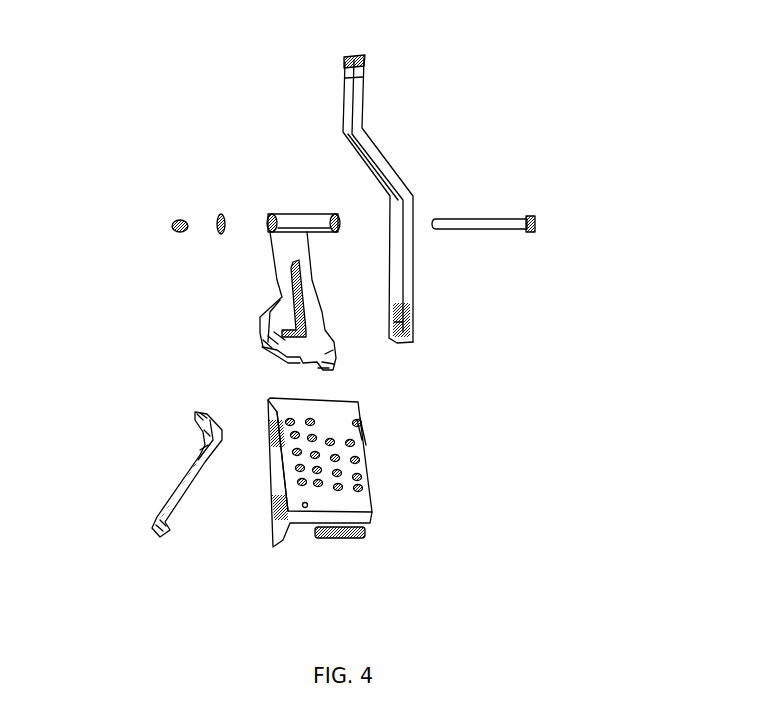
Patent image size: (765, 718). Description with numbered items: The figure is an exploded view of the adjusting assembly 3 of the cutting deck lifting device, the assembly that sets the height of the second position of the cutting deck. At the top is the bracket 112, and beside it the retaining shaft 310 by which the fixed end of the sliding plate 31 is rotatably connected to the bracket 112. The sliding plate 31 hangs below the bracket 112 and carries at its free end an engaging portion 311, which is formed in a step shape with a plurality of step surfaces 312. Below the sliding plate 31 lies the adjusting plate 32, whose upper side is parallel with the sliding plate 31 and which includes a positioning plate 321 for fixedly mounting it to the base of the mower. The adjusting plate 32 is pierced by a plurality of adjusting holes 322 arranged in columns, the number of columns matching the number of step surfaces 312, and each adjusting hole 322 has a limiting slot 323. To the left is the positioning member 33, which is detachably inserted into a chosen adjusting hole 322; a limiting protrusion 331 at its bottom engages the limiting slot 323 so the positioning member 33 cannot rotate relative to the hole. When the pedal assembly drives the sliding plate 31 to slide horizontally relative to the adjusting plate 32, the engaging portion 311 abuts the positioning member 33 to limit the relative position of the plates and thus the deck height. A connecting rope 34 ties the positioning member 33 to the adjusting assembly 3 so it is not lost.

The adjusting assembly 3 is at (128, 77).
The bracket 112 is at (383, 167).
The retaining shaft 310 is at (515, 217).
The sliding plate 31 is at (275, 280).
The engaging portion 311 is at (260, 347).
The step surfaces 312 is at (333, 357).
The positioning member 33 is at (197, 415).
The limiting protrusion 331 is at (197, 452).
The connecting rope 34 is at (163, 513).
The adjusting plate 32 is at (378, 523).
The positioning plate 321 is at (283, 525).
The adjusting holes 322 is at (362, 432).
The limiting slot 323 is at (362, 460).